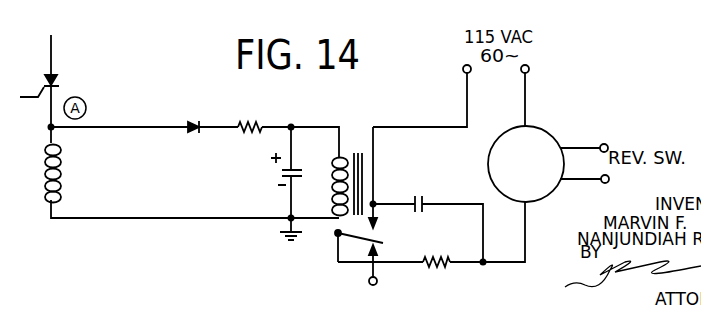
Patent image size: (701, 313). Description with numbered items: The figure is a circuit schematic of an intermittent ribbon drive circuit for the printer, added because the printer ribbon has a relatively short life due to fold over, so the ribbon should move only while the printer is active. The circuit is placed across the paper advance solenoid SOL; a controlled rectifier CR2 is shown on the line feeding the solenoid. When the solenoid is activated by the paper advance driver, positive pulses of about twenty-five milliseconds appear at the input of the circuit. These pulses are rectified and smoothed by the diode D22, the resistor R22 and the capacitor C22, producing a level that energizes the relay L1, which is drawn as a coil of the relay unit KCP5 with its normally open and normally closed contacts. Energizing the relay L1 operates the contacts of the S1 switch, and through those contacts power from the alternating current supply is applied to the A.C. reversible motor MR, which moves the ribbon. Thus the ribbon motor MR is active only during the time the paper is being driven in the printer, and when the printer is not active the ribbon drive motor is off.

The silicon controlled rectifier CR2 is at (55, 77).
The diode D22 is at (188, 116).
The resistor R22 is at (251, 116).
The capacitor C22 is at (272, 172).
The relay L1 is at (331, 181).
The P.B. KCP5 relay KCP5 is at (354, 204).
The switch S1 is at (362, 238).
The A.C. reversible motor MR is at (528, 130).
The paper advance solenoid SOL is at (102, 175).